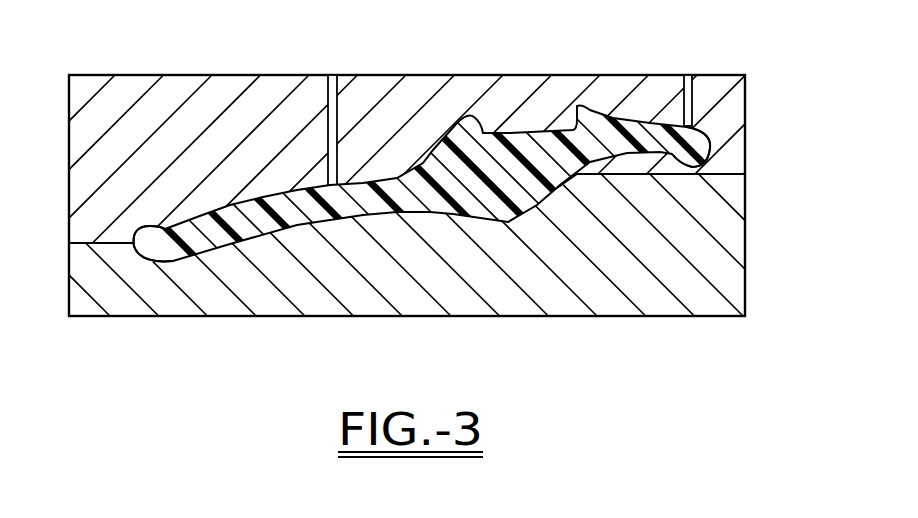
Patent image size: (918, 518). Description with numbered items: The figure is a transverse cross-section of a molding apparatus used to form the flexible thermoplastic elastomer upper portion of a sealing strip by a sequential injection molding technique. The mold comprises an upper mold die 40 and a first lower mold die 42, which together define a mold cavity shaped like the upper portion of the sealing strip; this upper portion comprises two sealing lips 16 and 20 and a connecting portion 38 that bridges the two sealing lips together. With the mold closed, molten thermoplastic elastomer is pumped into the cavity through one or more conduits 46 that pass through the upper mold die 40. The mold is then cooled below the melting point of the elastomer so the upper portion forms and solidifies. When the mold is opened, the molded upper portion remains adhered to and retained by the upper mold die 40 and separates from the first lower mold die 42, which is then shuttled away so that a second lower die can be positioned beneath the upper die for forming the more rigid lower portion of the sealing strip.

The sealing lip 16 is at (150, 255).
The sealing lip 20 is at (707, 143).
The connecting portion 38 is at (482, 157).
The upper mold die 40 is at (198, 75).
The first lower mold die 42 is at (522, 317).
The conduits 46 is at (332, 80).